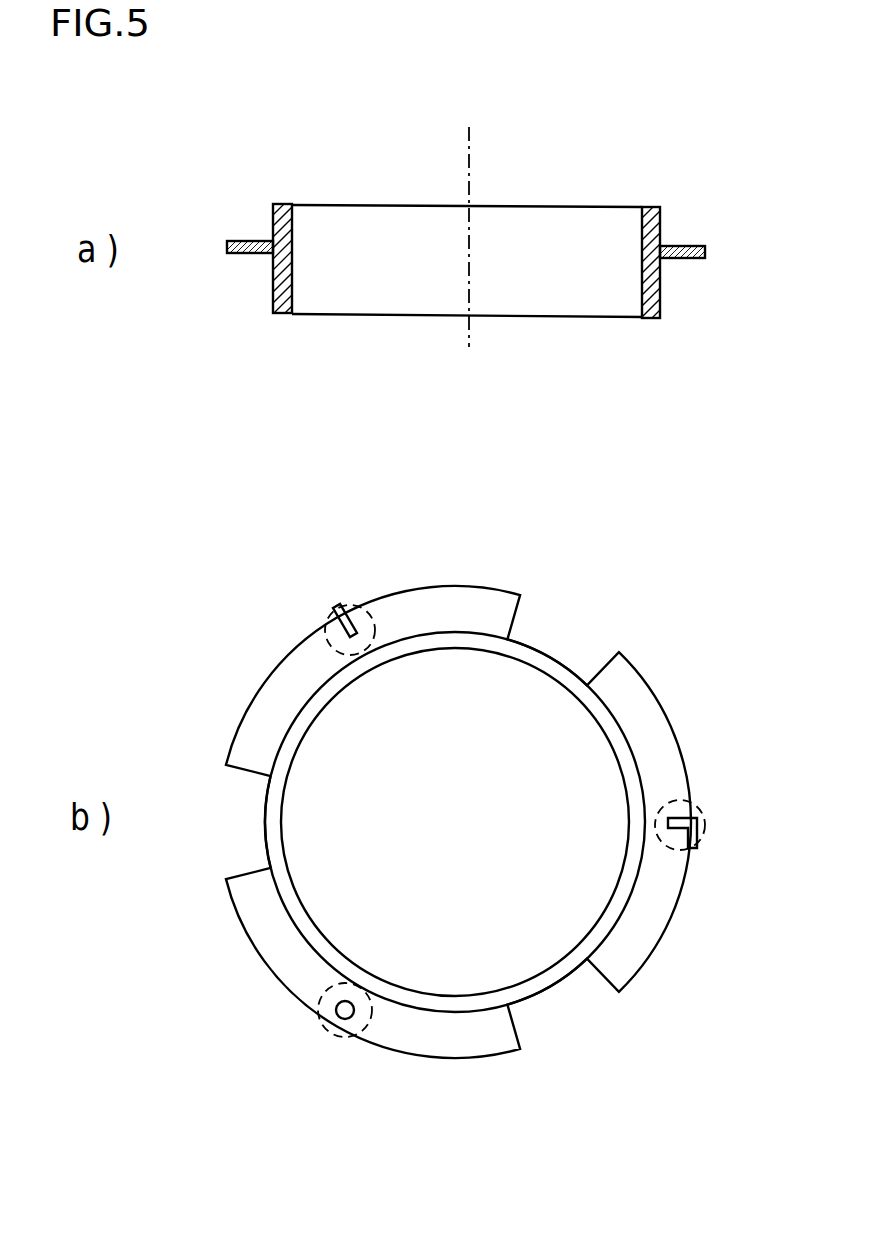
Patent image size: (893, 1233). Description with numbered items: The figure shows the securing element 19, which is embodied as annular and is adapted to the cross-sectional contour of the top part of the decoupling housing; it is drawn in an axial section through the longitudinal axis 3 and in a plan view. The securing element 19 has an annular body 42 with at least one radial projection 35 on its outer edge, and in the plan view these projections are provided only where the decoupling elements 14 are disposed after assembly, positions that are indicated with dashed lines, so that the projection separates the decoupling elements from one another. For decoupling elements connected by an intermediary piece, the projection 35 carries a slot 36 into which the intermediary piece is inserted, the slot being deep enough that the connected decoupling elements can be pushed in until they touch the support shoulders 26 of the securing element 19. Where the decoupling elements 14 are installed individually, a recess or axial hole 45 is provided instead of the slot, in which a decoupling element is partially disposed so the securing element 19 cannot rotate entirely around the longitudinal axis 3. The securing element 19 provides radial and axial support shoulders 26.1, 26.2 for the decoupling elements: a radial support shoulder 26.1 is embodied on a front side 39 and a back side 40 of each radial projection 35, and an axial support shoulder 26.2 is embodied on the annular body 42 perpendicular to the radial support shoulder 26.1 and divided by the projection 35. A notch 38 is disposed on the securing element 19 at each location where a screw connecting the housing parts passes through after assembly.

The longitudinal axis 3 is at (470, 140).
The decoupling element 14 is at (375, 620).
The securing element 19 is at (660, 207).
The support shoulders 26 is at (665, 270).
The radial support shoulder 26.1 is at (273, 206).
The axial support shoulder 26.2 is at (258, 238).
The radial projection 35 is at (672, 260).
The slot 36 is at (700, 248).
The notch 38 is at (585, 643).
The front side 39 is at (234, 241).
The back side 40 is at (233, 256).
The annular body 42 is at (655, 320).
The recess or axial hole 45 is at (353, 1015).